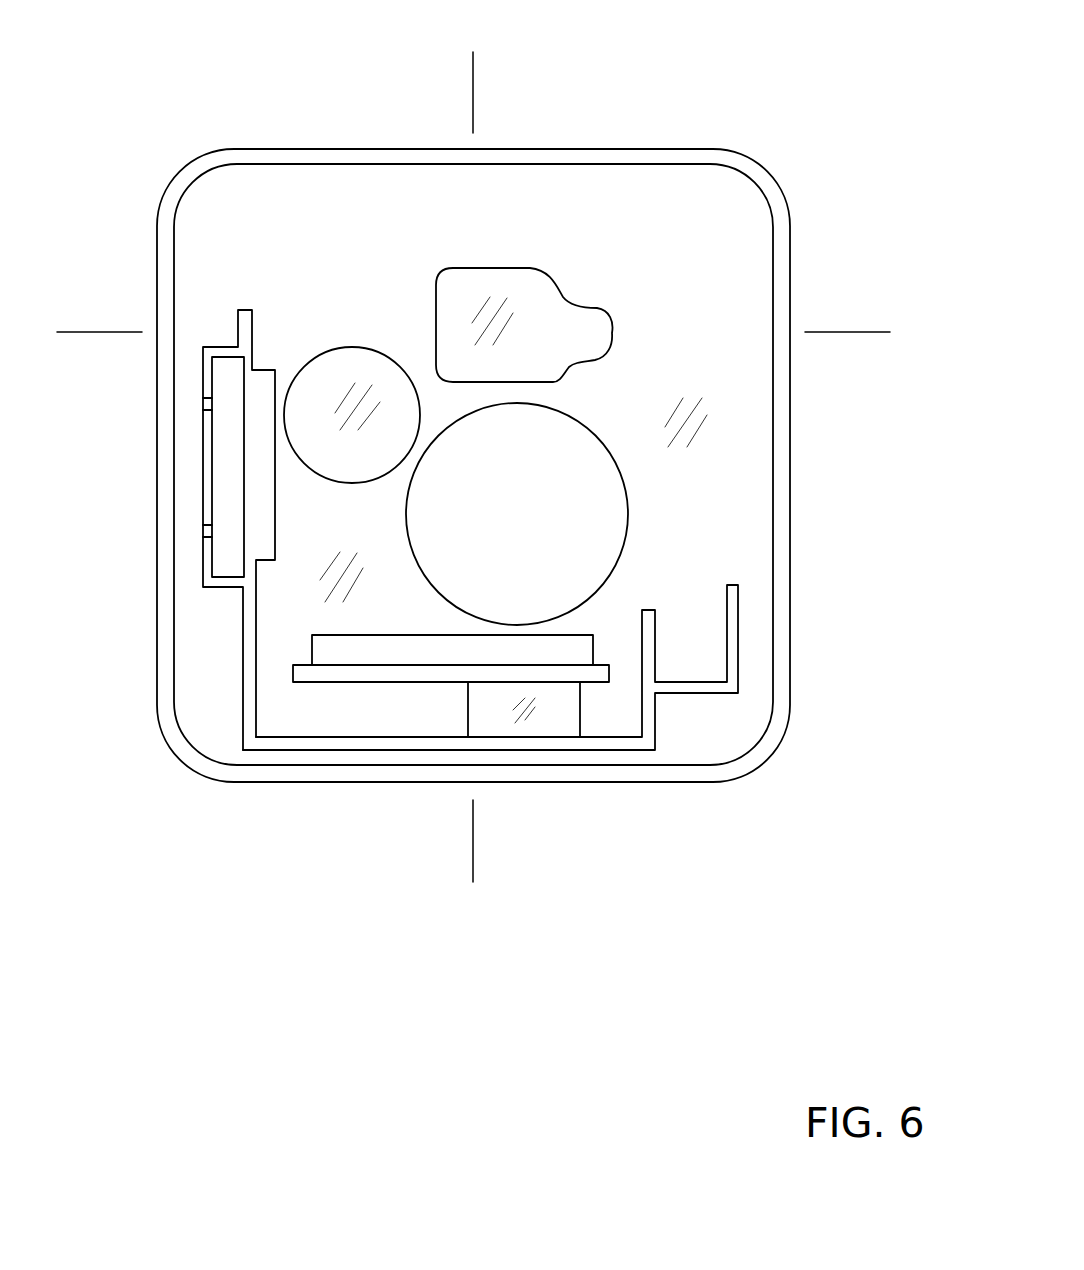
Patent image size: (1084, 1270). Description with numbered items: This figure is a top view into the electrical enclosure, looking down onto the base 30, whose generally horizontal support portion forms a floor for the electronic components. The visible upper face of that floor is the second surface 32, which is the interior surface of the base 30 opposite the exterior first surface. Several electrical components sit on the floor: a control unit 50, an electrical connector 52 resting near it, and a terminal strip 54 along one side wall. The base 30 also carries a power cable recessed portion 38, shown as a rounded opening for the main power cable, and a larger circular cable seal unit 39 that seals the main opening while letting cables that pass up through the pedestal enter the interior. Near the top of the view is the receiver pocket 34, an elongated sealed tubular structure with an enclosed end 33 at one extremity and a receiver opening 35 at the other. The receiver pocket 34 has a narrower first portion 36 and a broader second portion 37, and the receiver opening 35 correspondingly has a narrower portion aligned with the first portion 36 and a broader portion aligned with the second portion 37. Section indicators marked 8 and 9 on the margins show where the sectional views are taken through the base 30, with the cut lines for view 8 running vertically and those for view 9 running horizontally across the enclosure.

The base 30 is at (623, 782).
The second surface 32 is at (713, 523).
The enclosed end 33 is at (453, 297).
The receiver pocket 34 is at (562, 285).
The receiver opening 35 is at (577, 363).
The first portion 36 is at (615, 323).
The second portion 37 is at (490, 268).
The power cable recessed portion 38 is at (330, 360).
The cable seal unit 39 is at (626, 570).
The control unit 50 is at (325, 682).
The electrical connector 52 is at (330, 653).
The terminal strip 54 is at (263, 380).
The section line 8 is at (473, 93).
The section line 9 is at (99, 330).